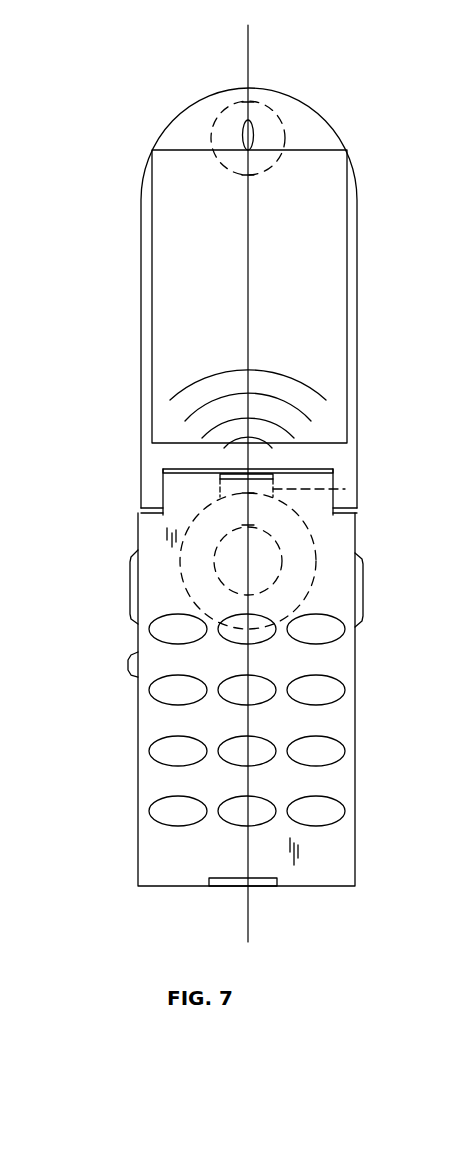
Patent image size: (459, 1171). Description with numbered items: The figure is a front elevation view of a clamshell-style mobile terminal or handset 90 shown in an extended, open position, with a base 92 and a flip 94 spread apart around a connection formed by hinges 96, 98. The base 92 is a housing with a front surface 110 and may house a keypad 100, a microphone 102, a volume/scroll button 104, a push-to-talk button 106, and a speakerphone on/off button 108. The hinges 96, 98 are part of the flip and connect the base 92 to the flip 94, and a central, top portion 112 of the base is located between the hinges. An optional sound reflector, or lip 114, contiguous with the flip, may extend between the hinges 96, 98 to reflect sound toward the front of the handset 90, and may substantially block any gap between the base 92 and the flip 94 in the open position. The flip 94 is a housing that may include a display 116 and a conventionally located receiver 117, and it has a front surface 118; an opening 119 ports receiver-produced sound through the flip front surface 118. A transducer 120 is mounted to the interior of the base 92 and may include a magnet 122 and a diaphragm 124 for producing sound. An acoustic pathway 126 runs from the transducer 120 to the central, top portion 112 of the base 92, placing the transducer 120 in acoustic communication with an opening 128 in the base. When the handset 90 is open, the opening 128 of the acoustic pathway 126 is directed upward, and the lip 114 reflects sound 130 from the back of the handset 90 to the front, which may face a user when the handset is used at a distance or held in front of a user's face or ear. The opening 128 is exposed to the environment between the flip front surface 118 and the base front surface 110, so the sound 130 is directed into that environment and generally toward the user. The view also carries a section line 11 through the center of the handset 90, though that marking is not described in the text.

The handset 90 is at (147, 65).
The section line 11 is at (213, 37).
The base 92 is at (128, 824).
The flip 94 is at (349, 117).
The hinge 96 is at (152, 488).
The hinge 98 is at (348, 496).
The keypad 100 is at (164, 752).
The microphone 102 is at (260, 882).
The volume/scroll button 104 is at (364, 620).
The push-to-talk button 106 is at (130, 575).
The speakerphone on/off button 108 is at (128, 668).
The front surface 110 is at (247, 739).
The central, top portion 112 is at (320, 502).
The lip 114 is at (308, 468).
The display 116 is at (168, 242).
The receiver 117 is at (269, 107).
The front surface 118 is at (181, 134).
The opening 119 is at (255, 133).
The transducer 120 is at (318, 580).
The magnet 122 is at (217, 570).
The diaphragm 124 is at (182, 578).
The acoustic pathway 126 is at (345, 489).
The opening 128 is at (225, 468).
The sound 130 is at (200, 382).